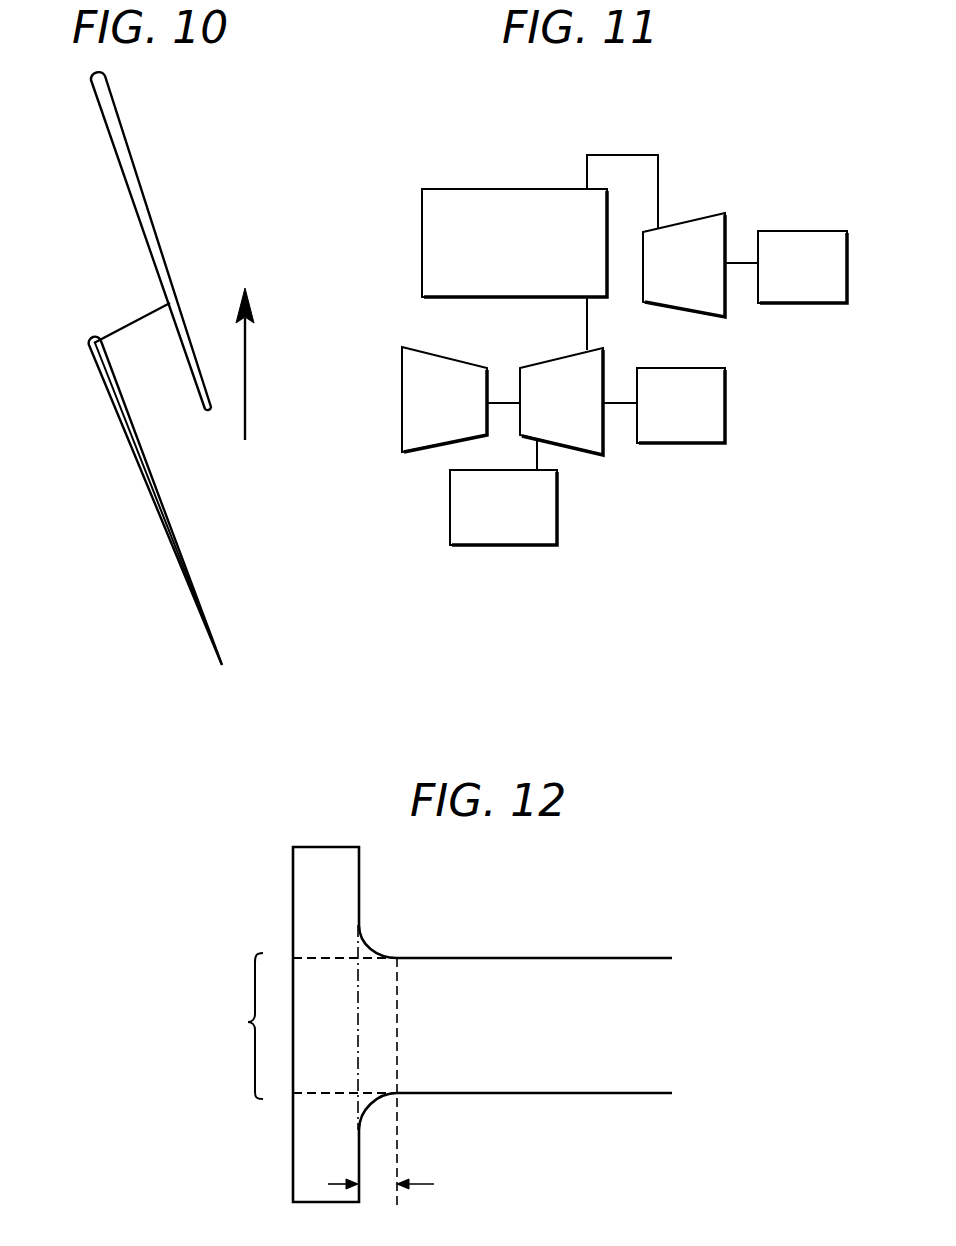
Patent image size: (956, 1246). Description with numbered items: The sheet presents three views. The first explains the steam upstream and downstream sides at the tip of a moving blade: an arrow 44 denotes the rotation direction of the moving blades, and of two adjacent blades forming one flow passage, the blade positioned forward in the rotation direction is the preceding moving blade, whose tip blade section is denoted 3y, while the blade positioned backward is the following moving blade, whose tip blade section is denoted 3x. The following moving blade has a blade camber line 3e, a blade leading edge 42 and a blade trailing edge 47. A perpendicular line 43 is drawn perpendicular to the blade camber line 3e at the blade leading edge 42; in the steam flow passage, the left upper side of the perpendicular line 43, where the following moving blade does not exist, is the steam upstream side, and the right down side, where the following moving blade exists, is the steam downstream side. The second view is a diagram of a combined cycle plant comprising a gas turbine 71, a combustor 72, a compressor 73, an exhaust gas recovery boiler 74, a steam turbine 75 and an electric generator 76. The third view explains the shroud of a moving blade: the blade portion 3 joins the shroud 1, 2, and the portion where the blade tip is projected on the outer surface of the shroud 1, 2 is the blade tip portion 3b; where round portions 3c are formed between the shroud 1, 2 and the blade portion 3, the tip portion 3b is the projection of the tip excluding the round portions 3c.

In FIG. 12, the shroud 1 is at (326, 996).
In FIG. 12, the shroud 2 is at (335, 847).
In FIG. 12, the blade portion 3 is at (628, 968).
In FIG. 12, the blade tip portion 3b is at (305, 1026).
In FIG. 12, the round portions 3c is at (381, 1066).
In FIG. 10, the blade camber line 3e is at (137, 447).
In FIG. 10, the blade section of following moving blade 3x is at (142, 445).
In FIG. 10, the blade section of preceding moving blade 3y is at (141, 190).
In FIG. 10, the blade leading edge 42 is at (88, 348).
In FIG. 10, the perpendicular line 43 is at (123, 325).
In FIG. 10, the arrow 44 is at (258, 364).
In FIG. 10, the blade trailing edge 47 is at (225, 664).
In FIG. 11, the gas turbine 71 is at (578, 409).
In FIG. 11, the combustor 72 is at (503, 507).
In FIG. 11, the compressor 73 is at (461, 399).
In FIG. 11, the exhaust gas recovery boiler 74 is at (540, 252).
In FIG. 11, the steam turbine 75 is at (700, 265).
In FIG. 11, the electric generator 76 is at (742, 337).